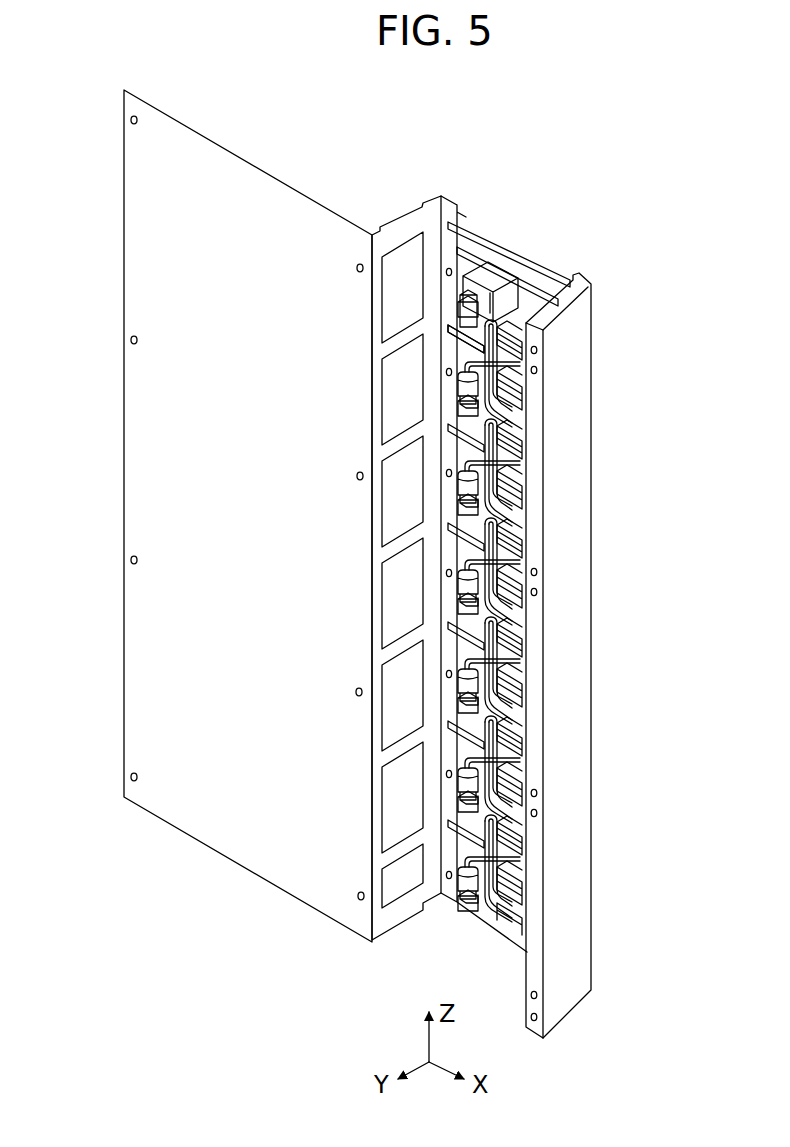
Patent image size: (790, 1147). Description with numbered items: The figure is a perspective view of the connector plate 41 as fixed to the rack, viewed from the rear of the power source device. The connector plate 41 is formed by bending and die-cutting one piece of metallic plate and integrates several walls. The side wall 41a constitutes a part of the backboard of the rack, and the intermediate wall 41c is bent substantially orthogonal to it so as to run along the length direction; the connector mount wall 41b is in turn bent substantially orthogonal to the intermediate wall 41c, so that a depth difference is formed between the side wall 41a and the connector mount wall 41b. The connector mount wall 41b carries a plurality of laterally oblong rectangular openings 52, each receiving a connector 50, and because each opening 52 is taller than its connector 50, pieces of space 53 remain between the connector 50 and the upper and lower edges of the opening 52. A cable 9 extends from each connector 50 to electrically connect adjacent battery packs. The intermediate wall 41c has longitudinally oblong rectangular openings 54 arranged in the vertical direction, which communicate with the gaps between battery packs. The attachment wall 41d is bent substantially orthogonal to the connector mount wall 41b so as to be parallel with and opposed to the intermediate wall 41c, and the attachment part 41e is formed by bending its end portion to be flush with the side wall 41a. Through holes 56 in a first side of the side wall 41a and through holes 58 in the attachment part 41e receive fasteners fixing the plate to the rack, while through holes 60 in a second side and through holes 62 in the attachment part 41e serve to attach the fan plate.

The connector plate 41 is at (458, 170).
The side wall 41a is at (257, 168).
The connector mount wall 41b is at (543, 261).
The intermediate wall 41c is at (395, 218).
The attachment wall 41d is at (567, 432).
The attachment part 41e is at (545, 542).
The connector 50 is at (522, 418).
The opening 52 is at (460, 253).
The space 53 is at (517, 497).
The opening 54 is at (382, 422).
The through hole 56 is at (130, 344).
The through hole 58 is at (536, 349).
The through hole 60 is at (357, 480).
The through hole 62 is at (537, 592).
The cable 9 is at (510, 472).